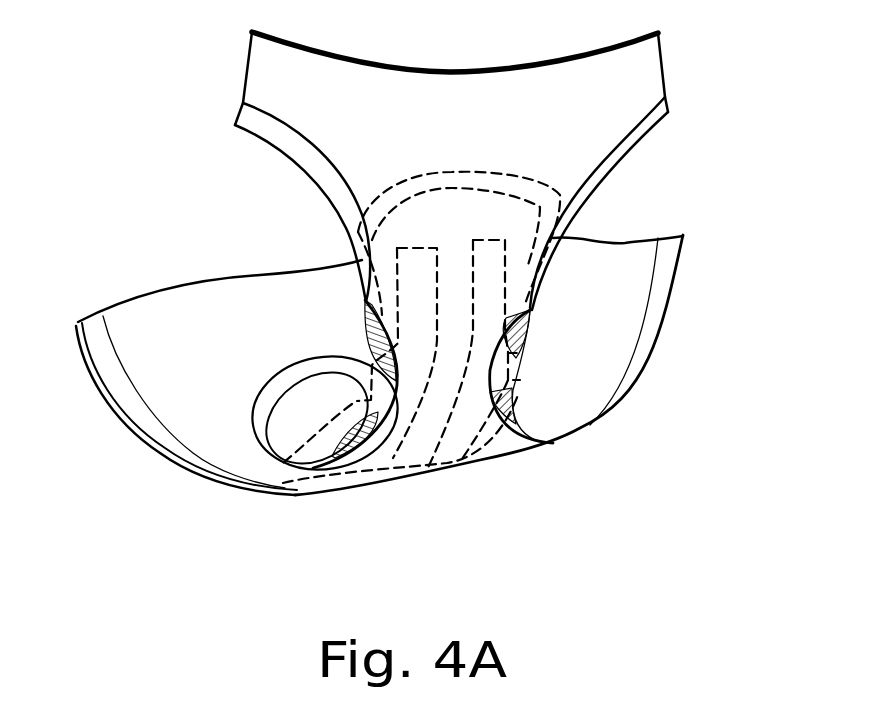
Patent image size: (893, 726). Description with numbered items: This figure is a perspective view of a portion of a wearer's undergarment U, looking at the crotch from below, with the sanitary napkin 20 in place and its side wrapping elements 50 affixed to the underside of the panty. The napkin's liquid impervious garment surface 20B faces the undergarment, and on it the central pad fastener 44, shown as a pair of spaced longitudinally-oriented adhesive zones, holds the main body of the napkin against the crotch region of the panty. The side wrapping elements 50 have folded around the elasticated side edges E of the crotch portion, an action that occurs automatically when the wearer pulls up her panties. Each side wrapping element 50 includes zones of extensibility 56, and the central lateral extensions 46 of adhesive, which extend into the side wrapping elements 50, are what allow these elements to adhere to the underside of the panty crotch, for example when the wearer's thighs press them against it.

The undergarment U is at (642, 70).
The side edge of crotch portion E is at (655, 115).
The sanitary napkin 20 is at (298, 414).
The garment surface 20B is at (563, 192).
The central pad fastener 44 is at (397, 477).
The central lateral extension 46 is at (520, 380).
The side wrapping element 50 is at (530, 315).
The zone of extensibility 56 is at (362, 334).